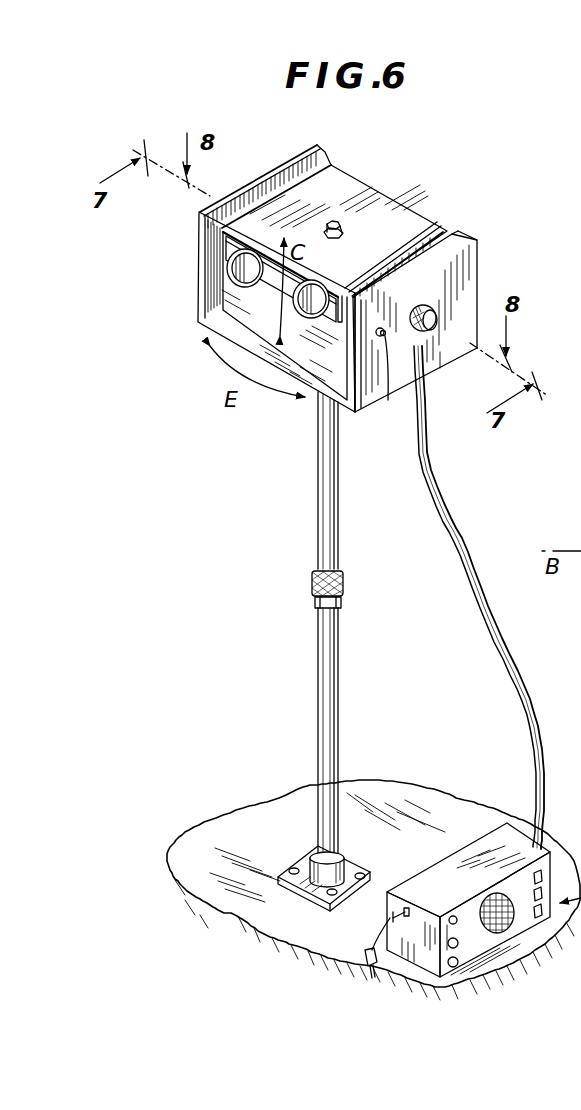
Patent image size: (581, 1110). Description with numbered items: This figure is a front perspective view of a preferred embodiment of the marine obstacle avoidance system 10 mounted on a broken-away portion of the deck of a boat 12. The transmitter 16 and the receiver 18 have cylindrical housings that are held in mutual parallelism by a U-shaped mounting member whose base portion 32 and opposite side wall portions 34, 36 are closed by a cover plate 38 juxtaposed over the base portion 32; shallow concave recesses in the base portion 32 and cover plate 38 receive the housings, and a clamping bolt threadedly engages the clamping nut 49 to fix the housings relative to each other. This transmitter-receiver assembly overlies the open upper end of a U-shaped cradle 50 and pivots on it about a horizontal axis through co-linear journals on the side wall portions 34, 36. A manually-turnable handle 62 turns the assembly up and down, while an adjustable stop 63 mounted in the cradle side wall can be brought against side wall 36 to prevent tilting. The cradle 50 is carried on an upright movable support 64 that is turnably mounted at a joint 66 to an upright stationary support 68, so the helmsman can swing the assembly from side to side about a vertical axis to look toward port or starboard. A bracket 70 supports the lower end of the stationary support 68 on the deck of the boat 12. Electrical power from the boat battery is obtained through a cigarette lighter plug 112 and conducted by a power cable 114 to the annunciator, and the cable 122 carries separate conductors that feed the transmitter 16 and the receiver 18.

The system 10 is at (339, 521).
The boat 12 is at (213, 853).
The transmitter 16 is at (243, 268).
The receiver 18 is at (322, 326).
The base portion 32 is at (263, 300).
The side wall portion 34 is at (324, 166).
The side wall portion 36 is at (440, 229).
The cover plate 38 is at (362, 195).
The clamping nut 49 is at (344, 234).
The cradle 50 is at (358, 416).
The handle 62 is at (438, 312).
The stop 63 is at (392, 380).
The upright movable support 64 is at (330, 484).
The joint 66 is at (310, 588).
The upright stationary support 68 is at (317, 693).
The bracket 70 is at (302, 862).
The cigarette lighter plug 112 is at (360, 967).
The power cable 114 is at (386, 926).
The cable 122 is at (503, 664).